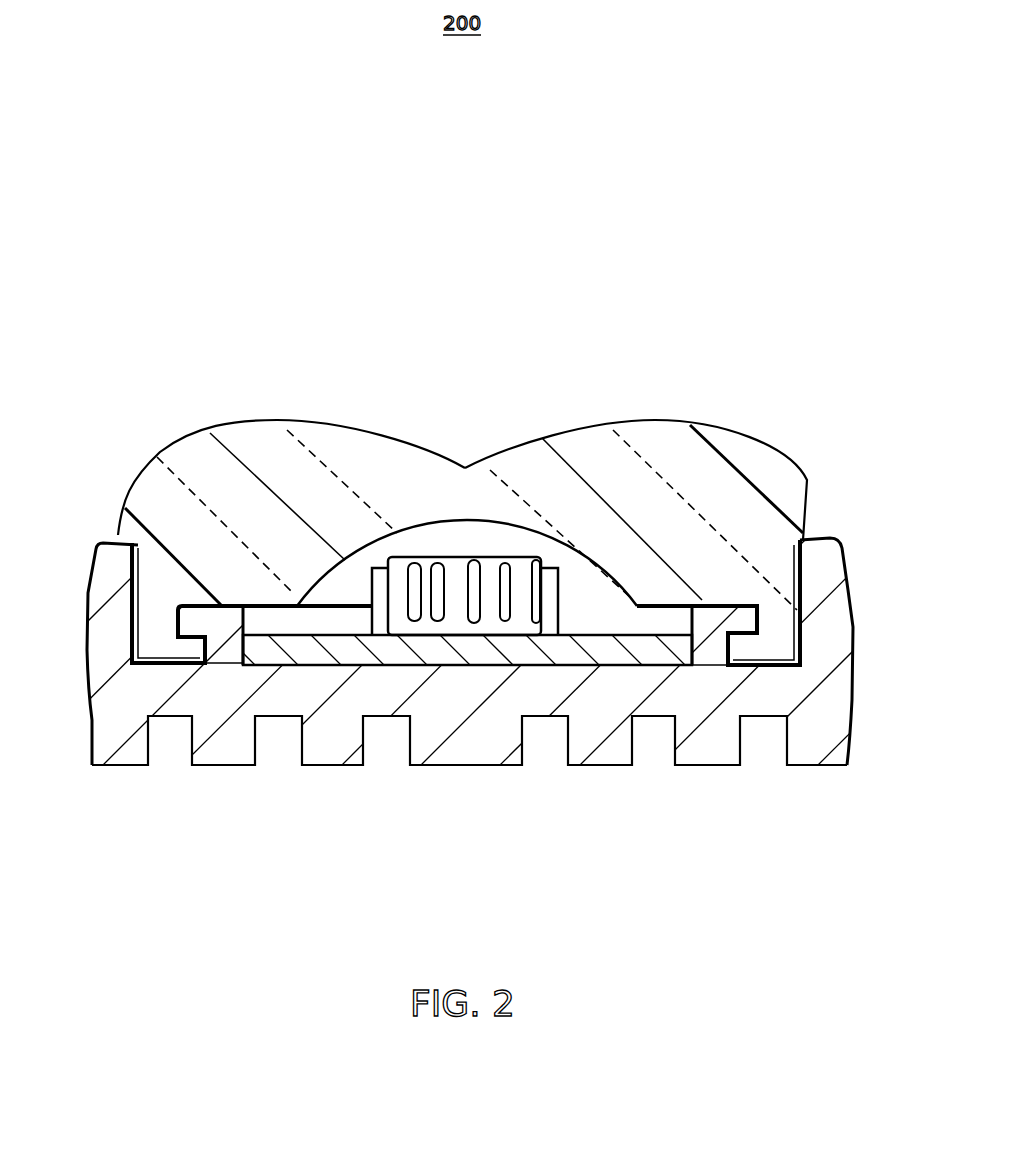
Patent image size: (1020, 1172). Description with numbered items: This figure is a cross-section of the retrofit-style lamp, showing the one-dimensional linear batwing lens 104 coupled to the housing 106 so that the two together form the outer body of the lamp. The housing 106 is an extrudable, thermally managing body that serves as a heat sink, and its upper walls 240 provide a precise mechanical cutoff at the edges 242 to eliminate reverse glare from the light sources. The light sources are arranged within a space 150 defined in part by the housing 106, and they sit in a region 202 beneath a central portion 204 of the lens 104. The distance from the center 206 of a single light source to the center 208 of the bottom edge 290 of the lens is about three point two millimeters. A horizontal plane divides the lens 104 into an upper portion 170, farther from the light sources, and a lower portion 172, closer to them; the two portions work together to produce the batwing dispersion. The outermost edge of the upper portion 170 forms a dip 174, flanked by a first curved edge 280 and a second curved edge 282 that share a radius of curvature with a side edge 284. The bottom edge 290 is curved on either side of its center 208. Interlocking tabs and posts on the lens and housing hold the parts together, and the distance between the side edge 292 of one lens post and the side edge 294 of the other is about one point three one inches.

The one-dimensional linear batwing lens 104 is at (580, 428).
The housing 106 is at (593, 765).
The space 150 is at (597, 622).
The upper portion 170 is at (663, 453).
The lower portion 172 is at (647, 573).
The dip 174 is at (465, 472).
The region 202 is at (478, 537).
The central portion 204 is at (462, 488).
The center of the light source 206 is at (463, 558).
The center of the bottom edge 208 is at (453, 522).
The upper walls 240 is at (110, 580).
The edges 242 is at (130, 590).
The first curved edge 280 is at (345, 427).
The second curved edge 282 is at (237, 600).
The side edge 284 is at (137, 567).
The bottom edge 290 is at (560, 557).
The side edge 292 is at (133, 640).
The side edge 294 is at (806, 650).